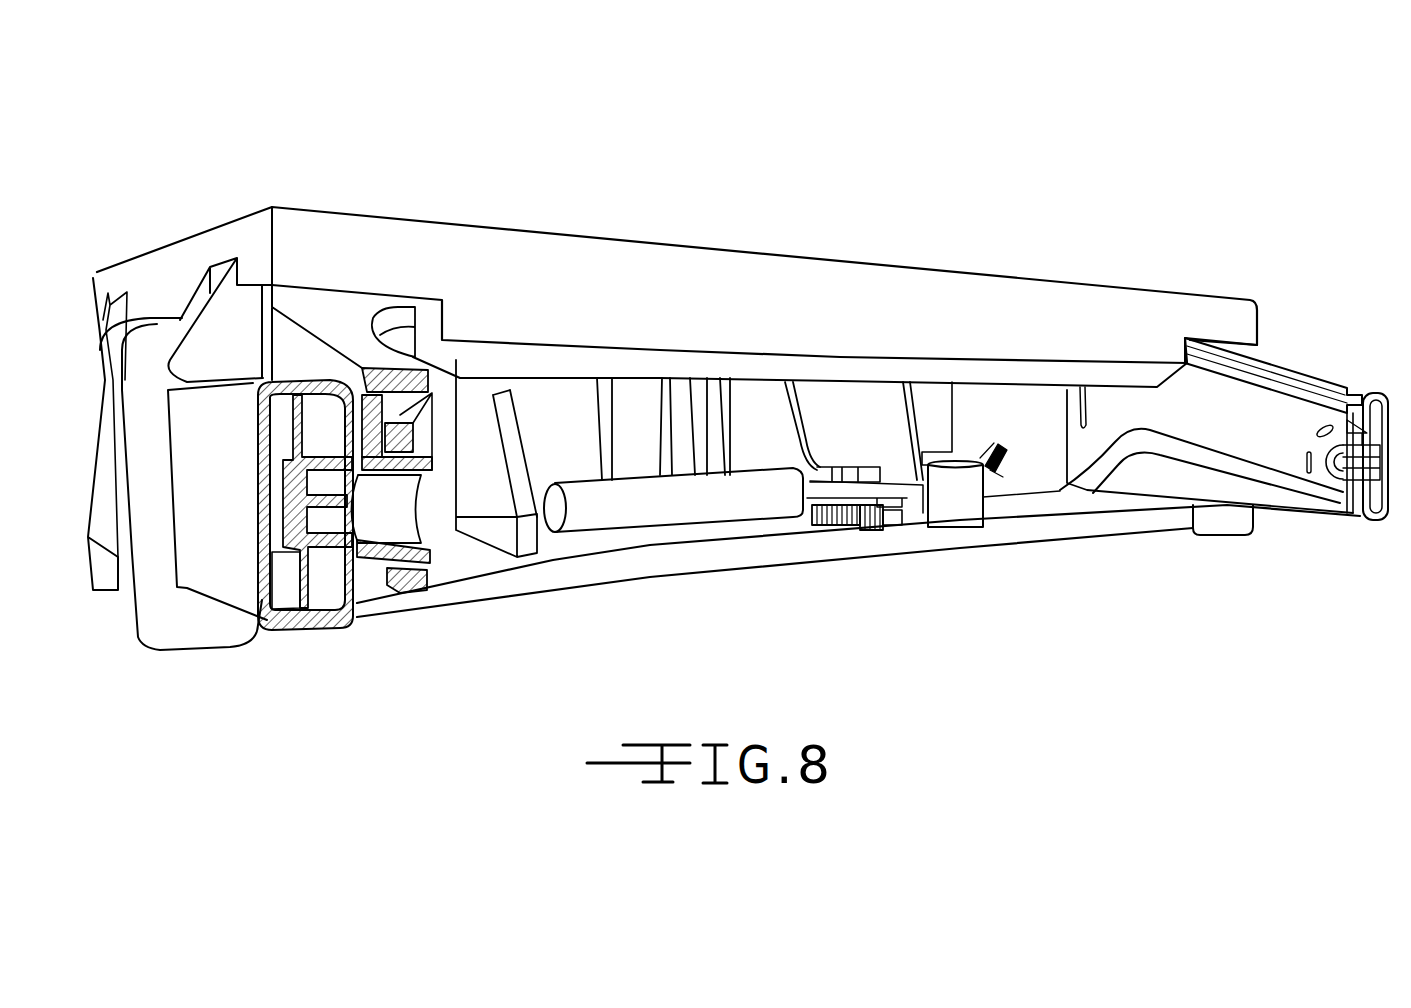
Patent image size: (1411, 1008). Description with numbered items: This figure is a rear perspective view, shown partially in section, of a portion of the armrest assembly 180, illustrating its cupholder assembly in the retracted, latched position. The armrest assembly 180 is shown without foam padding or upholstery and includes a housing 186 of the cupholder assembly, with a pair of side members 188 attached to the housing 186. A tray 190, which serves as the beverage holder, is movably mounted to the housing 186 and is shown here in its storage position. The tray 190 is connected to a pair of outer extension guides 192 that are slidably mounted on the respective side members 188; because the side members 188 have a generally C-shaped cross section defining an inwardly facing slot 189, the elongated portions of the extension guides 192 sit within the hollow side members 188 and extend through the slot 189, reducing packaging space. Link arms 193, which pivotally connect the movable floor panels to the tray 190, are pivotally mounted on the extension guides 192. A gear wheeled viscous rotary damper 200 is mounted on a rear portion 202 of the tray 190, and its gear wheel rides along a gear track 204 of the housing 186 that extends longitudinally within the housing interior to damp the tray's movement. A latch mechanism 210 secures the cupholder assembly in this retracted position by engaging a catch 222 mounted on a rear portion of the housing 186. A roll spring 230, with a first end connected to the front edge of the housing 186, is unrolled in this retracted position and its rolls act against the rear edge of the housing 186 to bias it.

The armrest assembly 180 is at (1143, 168).
The housing 186 is at (745, 557).
The side members 188 is at (243, 573).
The slot 189 is at (360, 540).
The tray 190 is at (648, 417).
The outer extension guides 192 is at (347, 337).
The link arms 193 is at (427, 432).
The damper 200 is at (843, 523).
The rear portion 202 is at (843, 418).
The gear track 204 is at (883, 527).
The latch mechanism 210 is at (1000, 445).
The catch 222 is at (963, 493).
The roll spring 230 is at (625, 500).